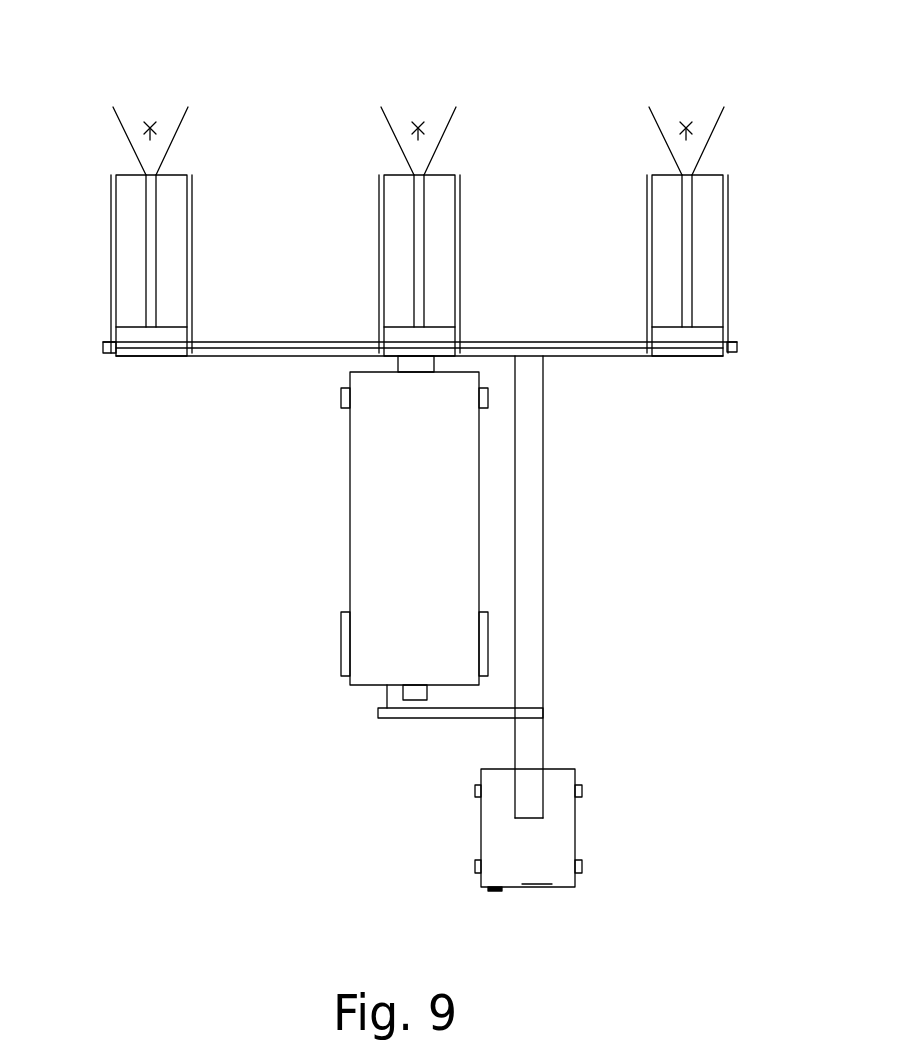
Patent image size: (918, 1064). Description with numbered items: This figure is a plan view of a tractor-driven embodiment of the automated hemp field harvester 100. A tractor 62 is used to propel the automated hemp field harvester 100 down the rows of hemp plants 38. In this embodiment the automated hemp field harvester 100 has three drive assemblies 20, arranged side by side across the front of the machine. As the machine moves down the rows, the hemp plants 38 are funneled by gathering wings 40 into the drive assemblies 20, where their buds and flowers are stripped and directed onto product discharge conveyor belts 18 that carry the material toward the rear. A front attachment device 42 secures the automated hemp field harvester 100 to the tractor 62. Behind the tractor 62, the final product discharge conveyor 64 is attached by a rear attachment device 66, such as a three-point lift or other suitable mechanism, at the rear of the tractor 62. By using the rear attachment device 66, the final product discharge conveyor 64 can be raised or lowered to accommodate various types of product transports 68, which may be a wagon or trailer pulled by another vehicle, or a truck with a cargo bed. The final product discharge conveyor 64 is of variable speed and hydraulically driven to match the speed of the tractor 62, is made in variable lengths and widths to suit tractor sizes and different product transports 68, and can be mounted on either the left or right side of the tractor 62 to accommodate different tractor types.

The automated hemp field harvester 100 is at (325, 78).
The product discharge conveyor belt 18 is at (110, 218).
The drive assembly 20 is at (362, 315).
The hemp plant 38 is at (151, 113).
The gathering wing 40 is at (130, 142).
The front attachment device 42 is at (395, 357).
The tractor 62 is at (350, 545).
The final product discharge conveyor 64 is at (543, 505).
The rear attachment device 66 is at (387, 697).
The product transport 68 is at (583, 793).